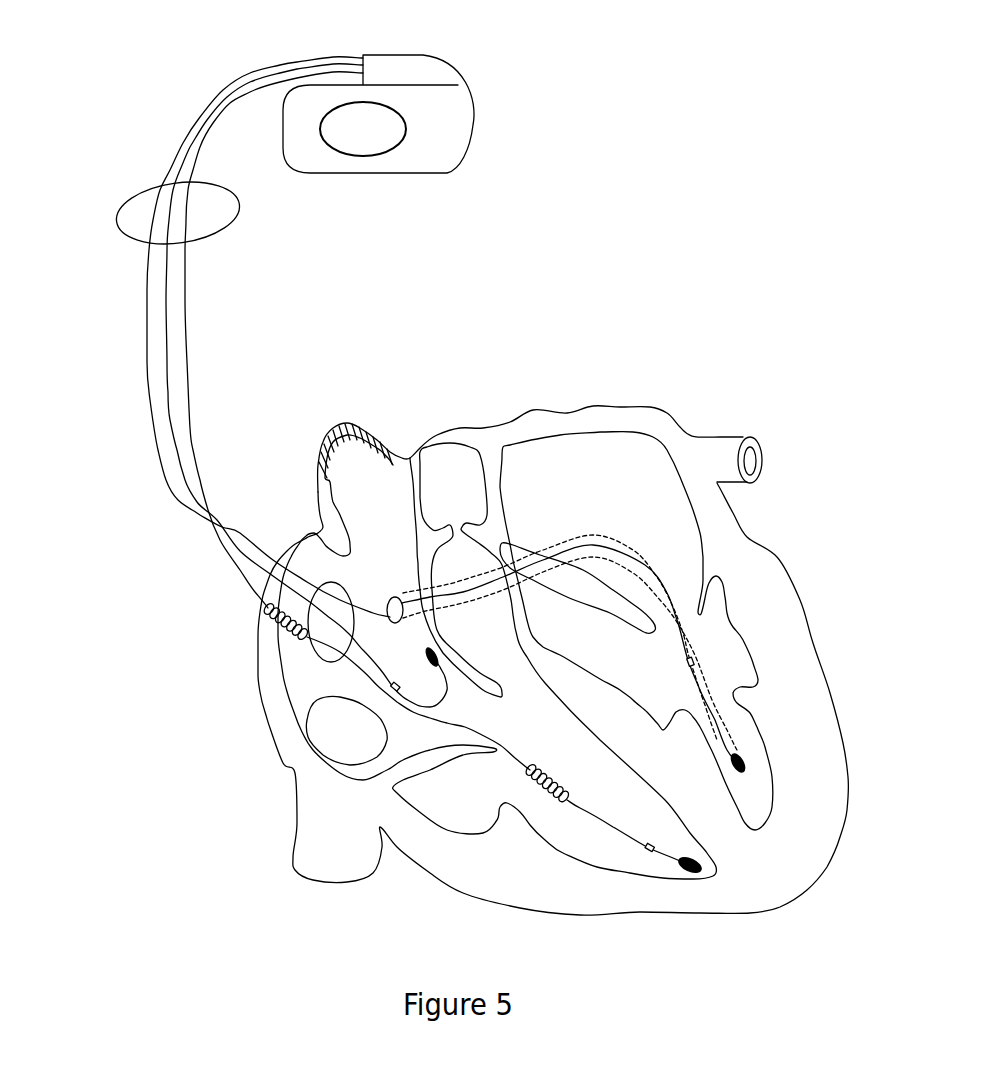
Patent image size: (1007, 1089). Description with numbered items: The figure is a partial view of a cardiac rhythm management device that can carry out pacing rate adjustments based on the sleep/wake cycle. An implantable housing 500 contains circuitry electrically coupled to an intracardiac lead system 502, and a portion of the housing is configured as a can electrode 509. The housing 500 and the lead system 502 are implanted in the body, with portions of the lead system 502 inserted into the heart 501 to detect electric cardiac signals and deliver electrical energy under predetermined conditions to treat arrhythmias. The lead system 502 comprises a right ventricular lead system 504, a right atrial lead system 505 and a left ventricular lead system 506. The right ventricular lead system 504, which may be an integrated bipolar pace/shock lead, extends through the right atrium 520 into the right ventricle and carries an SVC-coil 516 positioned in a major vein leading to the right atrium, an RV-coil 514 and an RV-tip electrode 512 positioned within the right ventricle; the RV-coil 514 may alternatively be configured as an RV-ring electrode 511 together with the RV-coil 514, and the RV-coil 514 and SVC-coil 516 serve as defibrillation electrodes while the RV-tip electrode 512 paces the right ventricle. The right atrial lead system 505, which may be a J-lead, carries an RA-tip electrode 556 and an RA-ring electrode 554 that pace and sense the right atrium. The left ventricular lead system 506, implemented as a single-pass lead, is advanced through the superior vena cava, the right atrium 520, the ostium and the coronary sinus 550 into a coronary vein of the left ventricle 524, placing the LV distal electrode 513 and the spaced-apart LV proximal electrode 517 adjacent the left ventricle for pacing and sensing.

The implantable housing 500 is at (433, 127).
The heart 501 is at (612, 432).
The intracardiac lead system 502 is at (143, 195).
The right ventricular lead system 504 is at (148, 362).
The right atrial lead system 505 is at (169, 392).
The left ventricular lead system 506 is at (190, 428).
The can electrode 509 is at (373, 140).
The RV-ring electrode 511 is at (648, 848).
The RV-tip electrode 512 is at (681, 857).
The LV distal electrode 513 is at (748, 771).
The RV-coil 514 is at (530, 772).
The SVC-coil 516 is at (262, 620).
The LV proximal electrode 517 is at (696, 662).
The right atrium 520 is at (336, 694).
The left ventricle 524 is at (613, 652).
The coronary sinus 550 is at (398, 598).
The RA-ring electrode 554 is at (413, 673).
The RA-tip electrode 556 is at (426, 651).